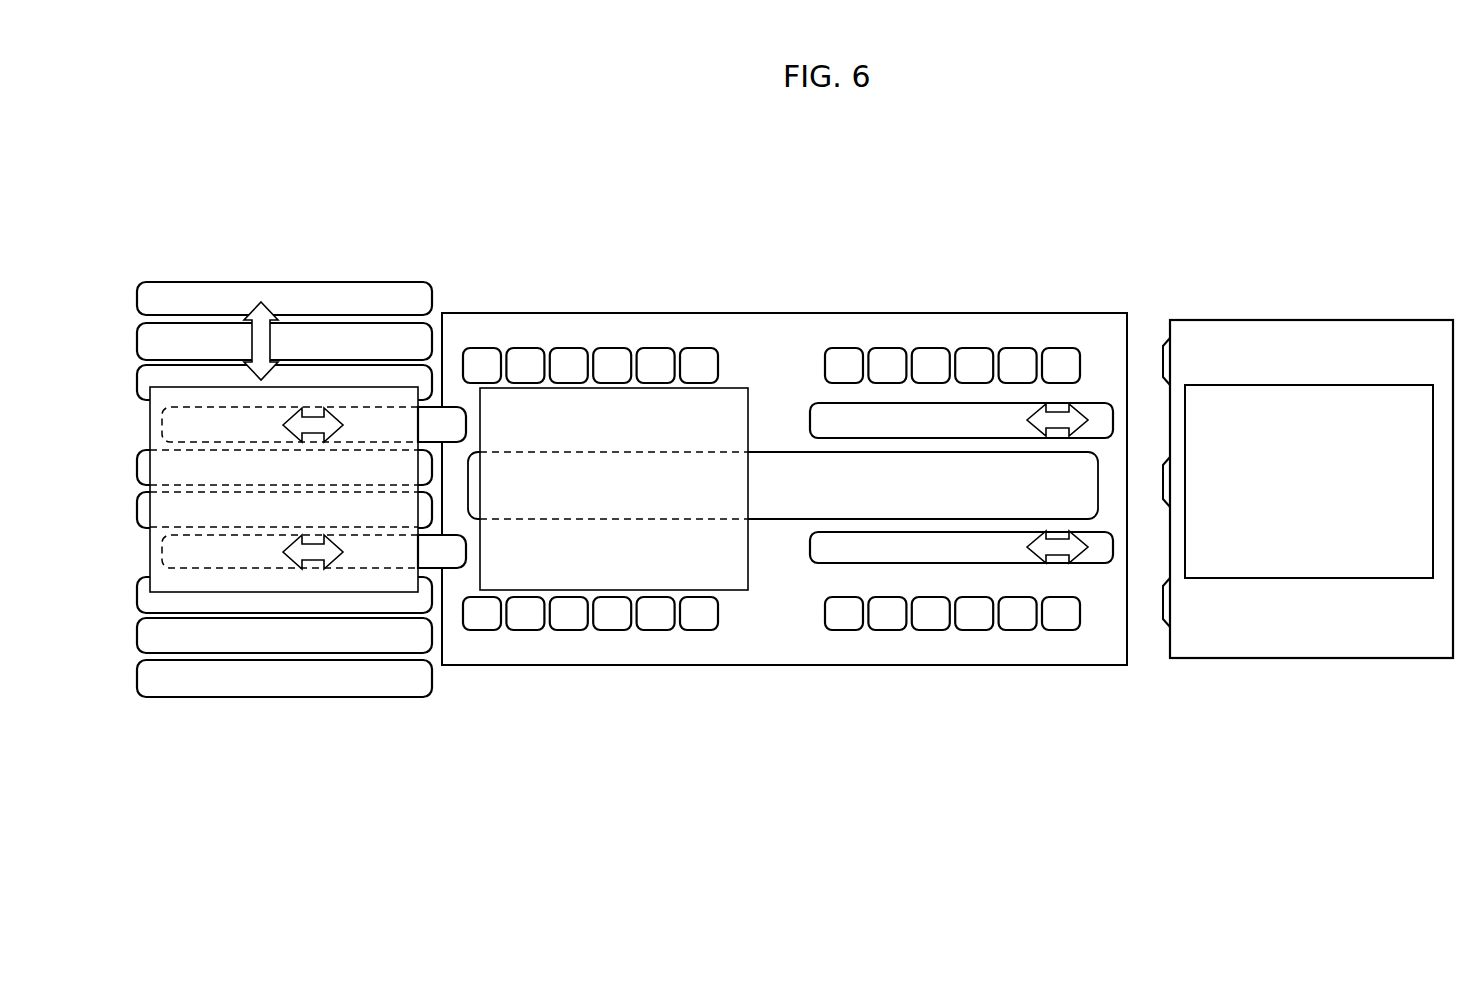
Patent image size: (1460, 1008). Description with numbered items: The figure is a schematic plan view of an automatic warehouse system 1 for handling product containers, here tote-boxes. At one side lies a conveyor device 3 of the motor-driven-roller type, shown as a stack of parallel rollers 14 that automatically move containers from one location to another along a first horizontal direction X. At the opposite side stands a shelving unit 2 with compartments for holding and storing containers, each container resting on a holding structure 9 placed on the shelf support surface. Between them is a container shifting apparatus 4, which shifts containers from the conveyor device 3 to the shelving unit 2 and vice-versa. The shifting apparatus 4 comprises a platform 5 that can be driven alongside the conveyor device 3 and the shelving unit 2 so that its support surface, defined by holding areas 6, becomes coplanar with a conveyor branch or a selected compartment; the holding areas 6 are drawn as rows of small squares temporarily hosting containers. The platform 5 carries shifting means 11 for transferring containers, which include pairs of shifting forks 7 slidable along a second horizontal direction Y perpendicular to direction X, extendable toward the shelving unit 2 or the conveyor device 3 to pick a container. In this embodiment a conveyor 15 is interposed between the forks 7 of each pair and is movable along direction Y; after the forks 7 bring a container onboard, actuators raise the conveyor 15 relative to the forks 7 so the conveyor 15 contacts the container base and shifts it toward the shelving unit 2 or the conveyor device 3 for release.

The automatic warehouse system 1 is at (765, 561).
The shelving unit 2 is at (1308, 513).
The conveyor device 3 is at (255, 524).
The container shifting apparatus 4 is at (644, 505).
The platform 5 is at (637, 443).
The holding areas 6 is at (605, 323).
The shifting forks 7 is at (637, 490).
The holding structures 9 is at (1403, 337).
The shifting means 11 is at (836, 456).
The rollers 14 is at (147, 342).
The conveyor 15 is at (776, 460).
The first horizontal direction X is at (262, 340).
The second horizontal direction Y is at (343, 423).